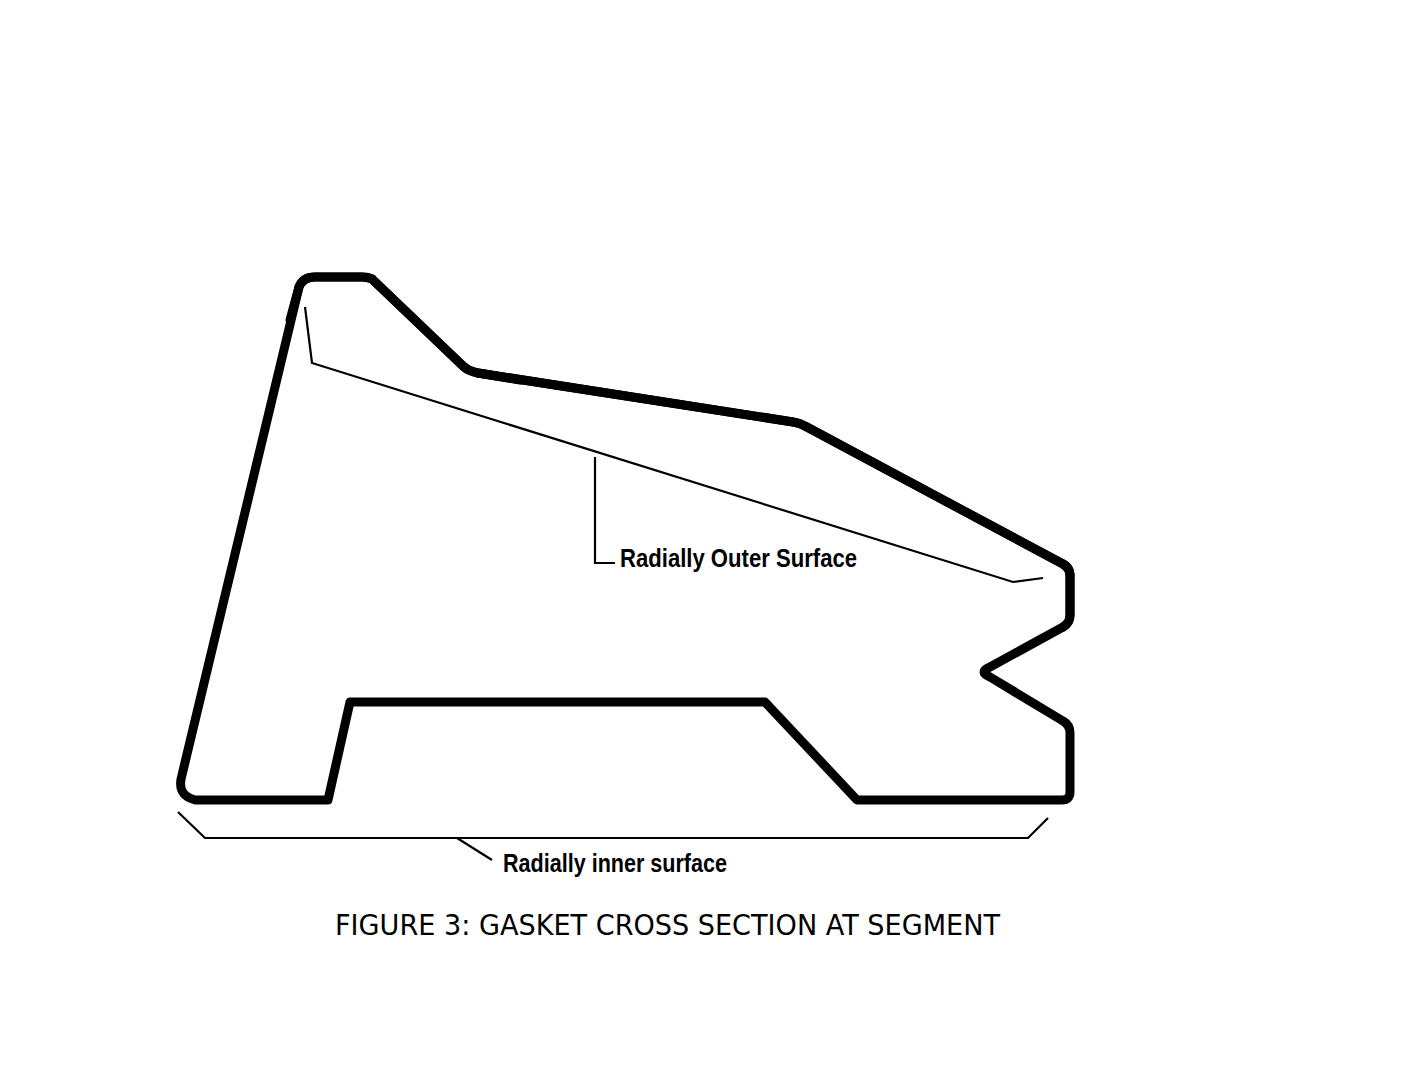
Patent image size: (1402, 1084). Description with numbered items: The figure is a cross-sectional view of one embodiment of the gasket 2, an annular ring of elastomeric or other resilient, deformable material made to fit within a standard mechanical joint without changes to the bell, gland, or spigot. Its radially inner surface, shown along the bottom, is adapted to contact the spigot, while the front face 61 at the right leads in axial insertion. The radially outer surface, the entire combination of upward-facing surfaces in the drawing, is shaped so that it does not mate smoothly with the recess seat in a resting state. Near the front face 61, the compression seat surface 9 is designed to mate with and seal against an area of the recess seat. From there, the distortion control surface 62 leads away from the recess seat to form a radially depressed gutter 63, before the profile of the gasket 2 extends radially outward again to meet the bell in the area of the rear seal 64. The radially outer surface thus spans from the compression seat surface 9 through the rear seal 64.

The gasket 2 is at (693, 708).
The compression seat surface 9 is at (910, 477).
The front face 61 is at (1075, 593).
The distortion control surface 62 is at (640, 395).
The gutter 63 is at (462, 367).
The rear seal 64 is at (333, 270).